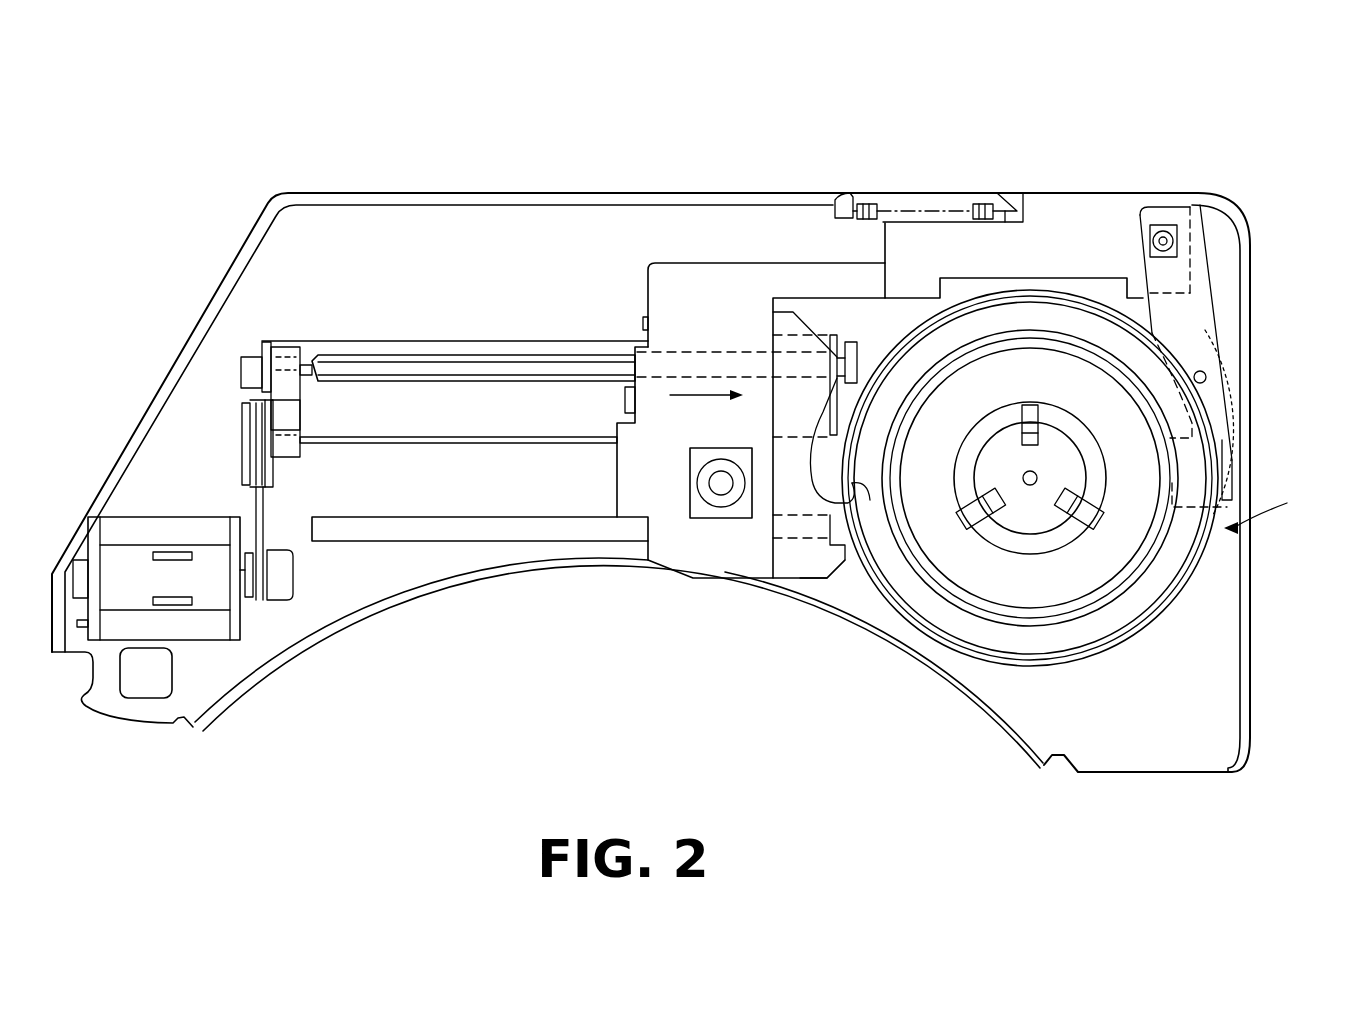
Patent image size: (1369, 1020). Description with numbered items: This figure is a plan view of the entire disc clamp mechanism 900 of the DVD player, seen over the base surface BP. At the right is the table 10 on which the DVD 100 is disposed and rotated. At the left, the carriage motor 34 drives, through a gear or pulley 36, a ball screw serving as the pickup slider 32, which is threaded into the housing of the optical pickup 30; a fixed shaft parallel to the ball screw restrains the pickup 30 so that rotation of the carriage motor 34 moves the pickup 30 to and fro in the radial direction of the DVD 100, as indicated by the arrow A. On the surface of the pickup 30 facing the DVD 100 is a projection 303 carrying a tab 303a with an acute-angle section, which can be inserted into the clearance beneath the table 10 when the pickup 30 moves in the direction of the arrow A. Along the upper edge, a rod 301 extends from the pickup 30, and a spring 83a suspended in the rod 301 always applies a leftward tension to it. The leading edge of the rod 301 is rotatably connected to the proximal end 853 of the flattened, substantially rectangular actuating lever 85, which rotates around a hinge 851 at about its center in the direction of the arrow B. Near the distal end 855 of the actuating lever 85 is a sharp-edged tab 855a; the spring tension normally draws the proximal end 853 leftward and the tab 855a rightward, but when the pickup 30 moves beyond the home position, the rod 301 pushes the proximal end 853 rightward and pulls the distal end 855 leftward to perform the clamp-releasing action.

The disc clamp mechanism 900 is at (733, 189).
The spring 83a is at (932, 197).
The rod 301 is at (1101, 207).
The proximal end 853 is at (1205, 217).
The actuating lever 85 is at (1218, 242).
The hinge 851 is at (1207, 378).
The distal end 855 is at (1230, 498).
The tab 855a is at (1148, 533).
The DVD 100 is at (1097, 578).
The table 10 is at (968, 628).
The optical pickup 30 is at (721, 585).
The projection 303 is at (815, 575).
The tab 303a is at (867, 578).
The pickup slider 32 is at (420, 380).
The carriage motor 34 is at (215, 642).
The gear or pulley 36 is at (241, 418).
The base surface BP is at (365, 592).
The arrow A is at (670, 395).
The arrow B is at (1266, 529).